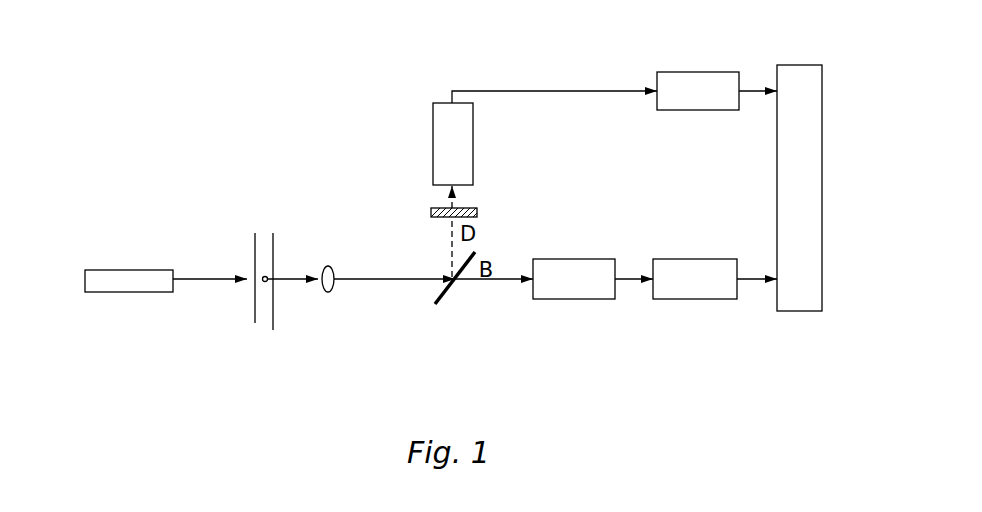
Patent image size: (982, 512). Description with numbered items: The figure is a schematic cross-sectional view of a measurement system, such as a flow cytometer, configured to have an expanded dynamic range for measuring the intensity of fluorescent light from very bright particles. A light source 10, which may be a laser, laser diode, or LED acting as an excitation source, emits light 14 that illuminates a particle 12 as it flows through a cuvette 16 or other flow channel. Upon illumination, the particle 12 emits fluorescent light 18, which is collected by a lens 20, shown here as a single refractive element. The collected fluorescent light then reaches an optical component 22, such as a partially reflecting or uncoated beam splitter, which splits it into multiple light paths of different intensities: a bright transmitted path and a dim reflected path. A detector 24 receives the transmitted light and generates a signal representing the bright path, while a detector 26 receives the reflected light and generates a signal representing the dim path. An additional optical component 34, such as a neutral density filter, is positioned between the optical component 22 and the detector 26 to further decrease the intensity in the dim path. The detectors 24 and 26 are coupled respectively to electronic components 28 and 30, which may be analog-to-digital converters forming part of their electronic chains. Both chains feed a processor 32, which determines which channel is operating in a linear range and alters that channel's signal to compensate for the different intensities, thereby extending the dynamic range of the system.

The light source 10 is at (128, 270).
The particle 12 is at (262, 282).
The light 14 is at (222, 278).
The cuvette 16 is at (275, 317).
The fluorescent light 18 is at (287, 278).
The lens 20 is at (331, 290).
The optical component 22 is at (443, 305).
The detector 24 is at (561, 291).
The detector 26 is at (440, 156).
The electronic component 28 is at (682, 291).
The electronic component 30 is at (685, 103).
The processor 32 is at (787, 192).
The additional optical component 34 is at (479, 208).